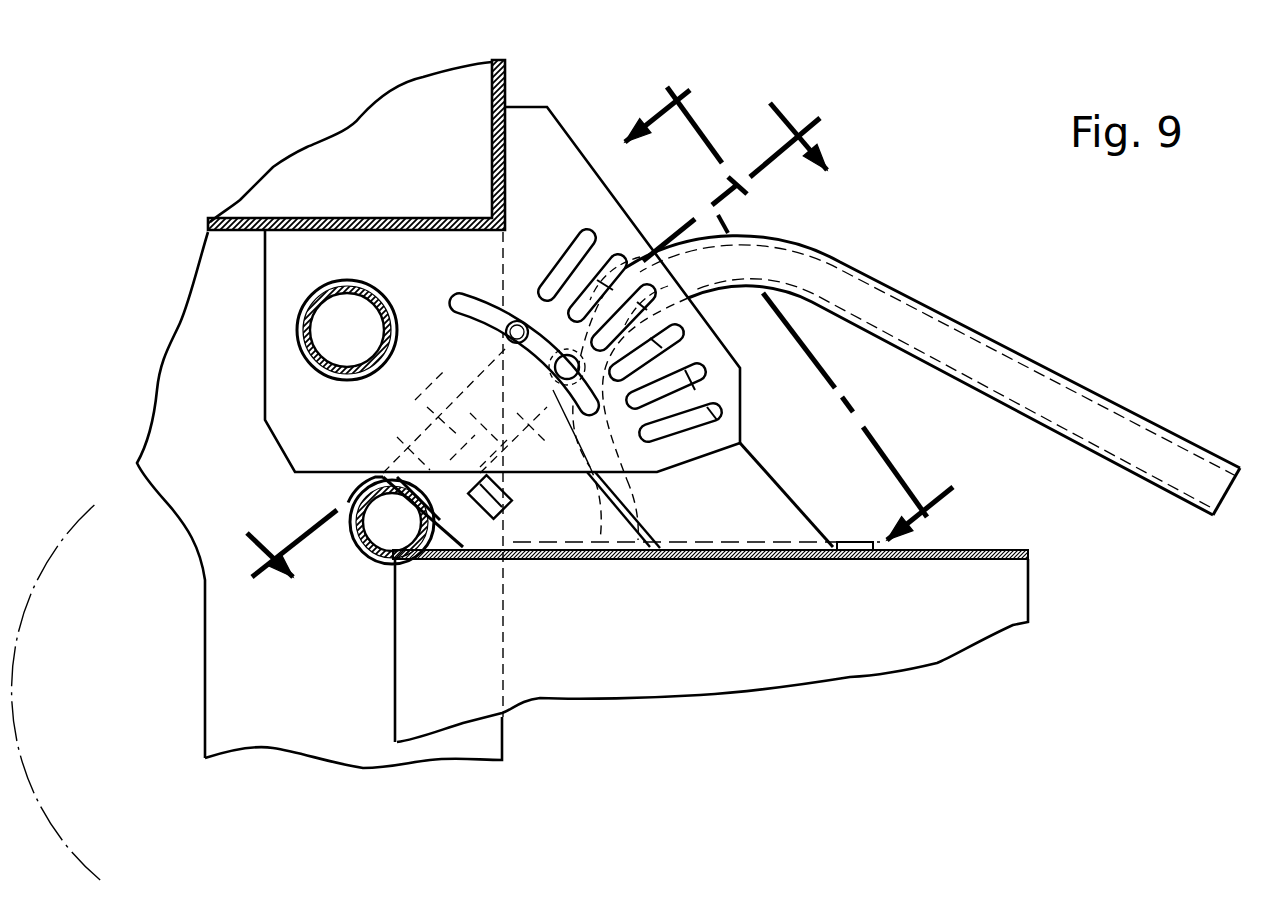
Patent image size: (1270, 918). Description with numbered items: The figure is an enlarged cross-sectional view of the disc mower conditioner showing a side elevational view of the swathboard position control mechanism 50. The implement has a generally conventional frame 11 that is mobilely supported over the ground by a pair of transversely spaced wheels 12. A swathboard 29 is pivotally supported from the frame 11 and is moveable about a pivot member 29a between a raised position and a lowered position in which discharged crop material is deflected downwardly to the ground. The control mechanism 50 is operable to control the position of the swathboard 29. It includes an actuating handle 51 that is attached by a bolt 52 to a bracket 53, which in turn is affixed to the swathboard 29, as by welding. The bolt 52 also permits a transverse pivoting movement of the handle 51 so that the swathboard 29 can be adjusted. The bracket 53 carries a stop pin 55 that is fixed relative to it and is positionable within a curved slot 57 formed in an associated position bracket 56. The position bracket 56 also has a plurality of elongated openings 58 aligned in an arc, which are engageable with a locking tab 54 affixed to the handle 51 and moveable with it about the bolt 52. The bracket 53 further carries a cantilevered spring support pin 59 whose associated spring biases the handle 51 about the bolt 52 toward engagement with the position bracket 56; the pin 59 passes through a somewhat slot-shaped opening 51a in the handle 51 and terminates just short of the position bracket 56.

The frame 11 is at (505, 82).
The wheels 12 is at (530, 324).
The swathboard 29 is at (1030, 568).
The pivot member 29a is at (353, 560).
The swathboard position control mechanism 50 is at (862, 157).
The actuating handle 51 is at (1040, 362).
The opening 51a is at (637, 487).
The bolt 52 is at (497, 515).
The bracket 53 is at (680, 518).
The locking tab 54 is at (650, 310).
The stop pin 55 is at (507, 340).
The position bracket 56 is at (563, 128).
The curved slot 57 is at (467, 298).
The elongated openings 58 is at (683, 338).
The cantilevered spring support pin 59 is at (587, 478).